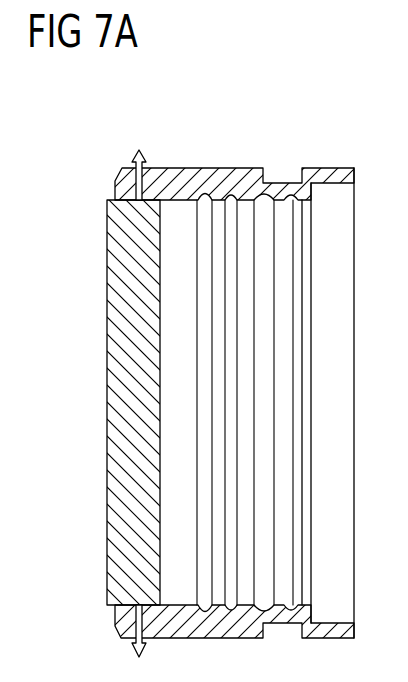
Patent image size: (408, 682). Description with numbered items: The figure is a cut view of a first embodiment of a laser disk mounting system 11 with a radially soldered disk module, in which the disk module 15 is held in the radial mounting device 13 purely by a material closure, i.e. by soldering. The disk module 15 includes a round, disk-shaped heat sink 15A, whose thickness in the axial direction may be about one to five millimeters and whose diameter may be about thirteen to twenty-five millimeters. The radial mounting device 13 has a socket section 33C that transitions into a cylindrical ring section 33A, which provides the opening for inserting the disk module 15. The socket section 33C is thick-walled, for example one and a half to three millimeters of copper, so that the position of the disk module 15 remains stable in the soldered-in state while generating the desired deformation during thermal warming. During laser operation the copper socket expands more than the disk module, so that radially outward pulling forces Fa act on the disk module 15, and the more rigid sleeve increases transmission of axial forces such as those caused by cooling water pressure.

The laser disk mounting system 11 is at (269, 130).
The radial mounting device 13 is at (213, 133).
The disk module 15 is at (90, 478).
The heat sink 15A is at (117, 375).
The cylindrical ring section 33A is at (329, 152).
The socket section 33C is at (161, 167).
The pulling forces Fa is at (118, 182).